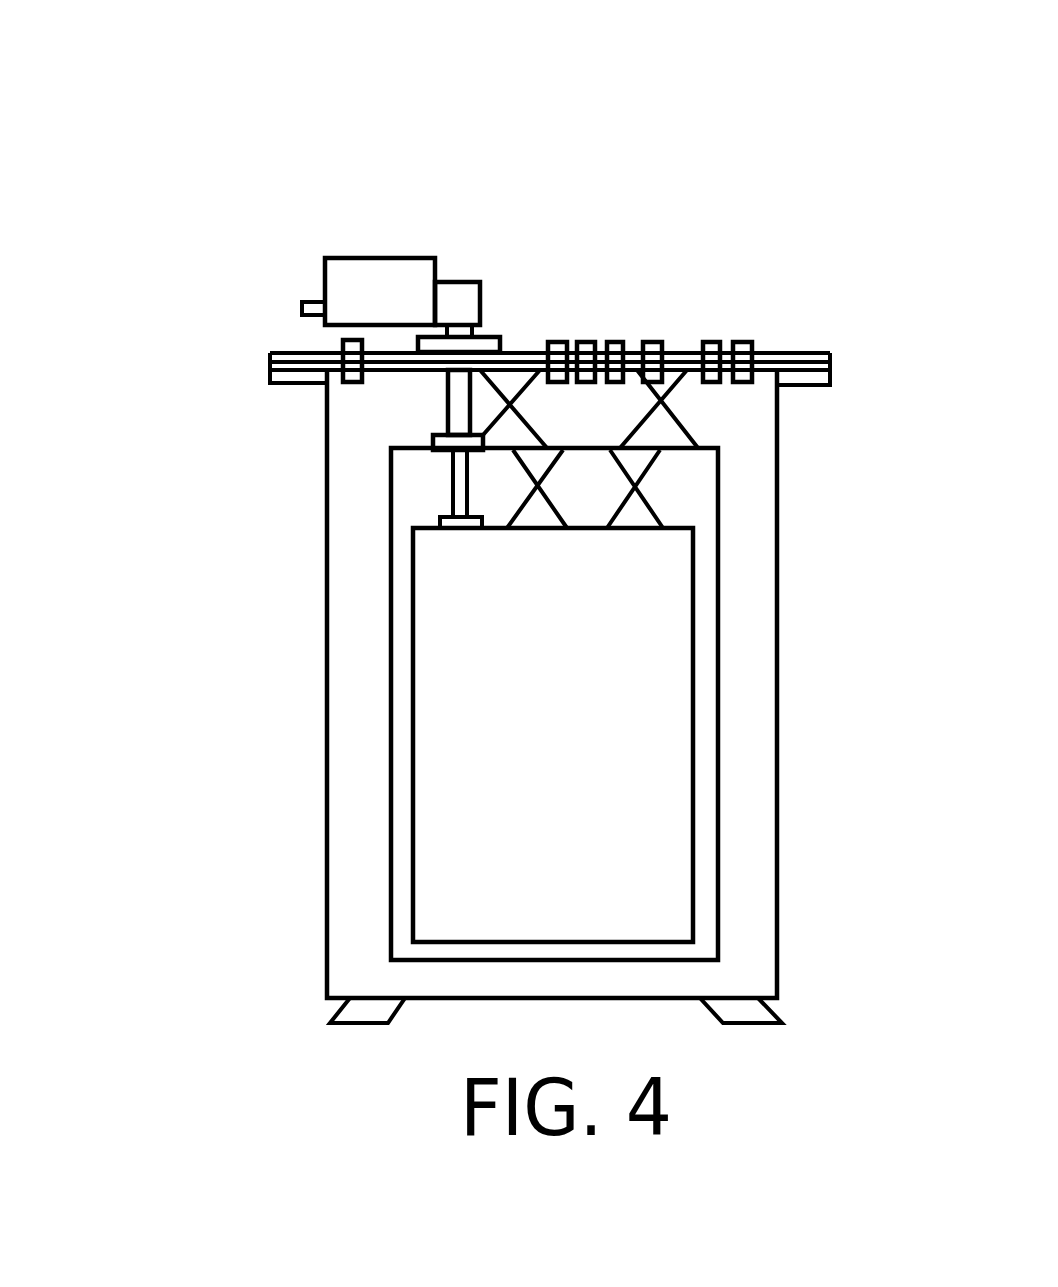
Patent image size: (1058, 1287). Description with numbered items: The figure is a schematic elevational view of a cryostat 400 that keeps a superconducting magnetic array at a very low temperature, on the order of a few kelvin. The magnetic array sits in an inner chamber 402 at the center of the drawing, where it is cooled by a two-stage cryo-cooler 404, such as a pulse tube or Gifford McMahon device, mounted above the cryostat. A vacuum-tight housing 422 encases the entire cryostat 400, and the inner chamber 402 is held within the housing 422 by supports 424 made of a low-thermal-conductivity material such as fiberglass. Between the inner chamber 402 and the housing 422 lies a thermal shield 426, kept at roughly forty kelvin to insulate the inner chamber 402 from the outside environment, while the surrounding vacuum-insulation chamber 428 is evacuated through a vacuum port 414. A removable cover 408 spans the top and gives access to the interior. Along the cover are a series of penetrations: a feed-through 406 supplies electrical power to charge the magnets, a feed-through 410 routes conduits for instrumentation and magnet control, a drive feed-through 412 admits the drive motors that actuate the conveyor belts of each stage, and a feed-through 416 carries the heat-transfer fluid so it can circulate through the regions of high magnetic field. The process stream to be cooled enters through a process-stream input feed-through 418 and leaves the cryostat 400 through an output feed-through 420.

The cryostat 400 is at (562, 144).
The inner chamber 402 is at (415, 742).
The two-stage cryo-cooler 404 is at (327, 270).
The feed-through 406 is at (342, 350).
The removable cover 408 is at (530, 347).
The feed-through 410 is at (553, 343).
The drive feed-through 412 is at (585, 343).
The vacuum port 414 is at (610, 343).
The feed-through 416 is at (648, 343).
The process-stream input feed-through 418 is at (713, 340).
The output feed-through 420 is at (738, 340).
The vacuum-tight housing 422 is at (777, 555).
The supports 424 is at (647, 478).
The thermal shield 426 is at (720, 755).
The vacuum-insulation chamber 428 is at (378, 415).